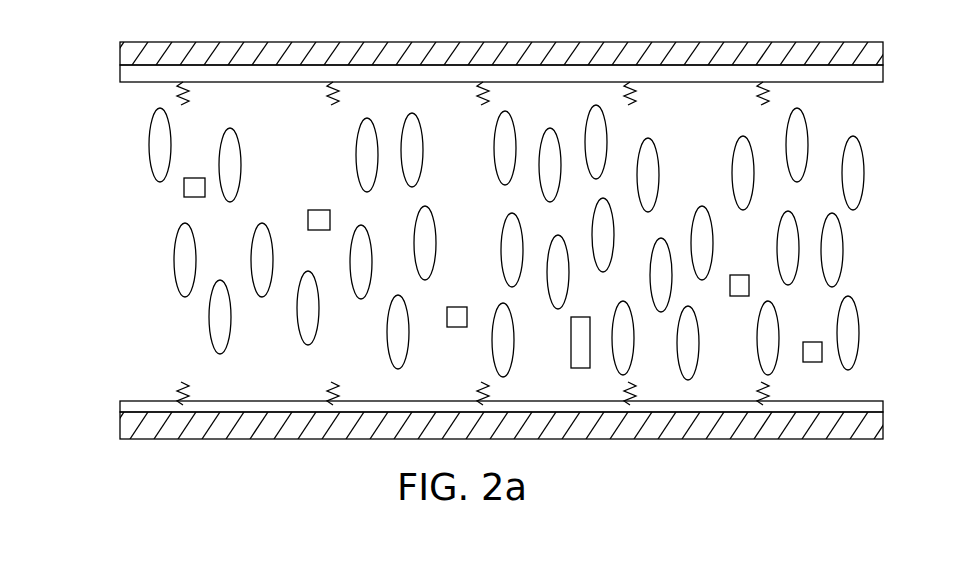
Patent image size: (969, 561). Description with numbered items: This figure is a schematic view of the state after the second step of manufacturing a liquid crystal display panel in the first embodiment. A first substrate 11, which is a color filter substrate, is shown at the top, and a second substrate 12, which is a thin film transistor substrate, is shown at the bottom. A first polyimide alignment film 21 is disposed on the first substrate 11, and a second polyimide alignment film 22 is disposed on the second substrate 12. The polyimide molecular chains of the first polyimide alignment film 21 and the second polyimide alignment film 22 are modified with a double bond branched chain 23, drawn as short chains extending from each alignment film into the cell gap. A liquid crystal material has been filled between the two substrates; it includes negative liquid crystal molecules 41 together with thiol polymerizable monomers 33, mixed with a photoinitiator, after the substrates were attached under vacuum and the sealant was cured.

The first substrate 11 is at (120, 53).
The first polyimide alignment film 21 is at (120, 72).
The double bond branched chain 23 is at (180, 85).
The thiol polymerizable monomers 33 is at (184, 187).
The negative liquid crystal molecules 41 is at (173, 268).
The second polyimide alignment film 22 is at (120, 403).
The second substrate 12 is at (120, 427).